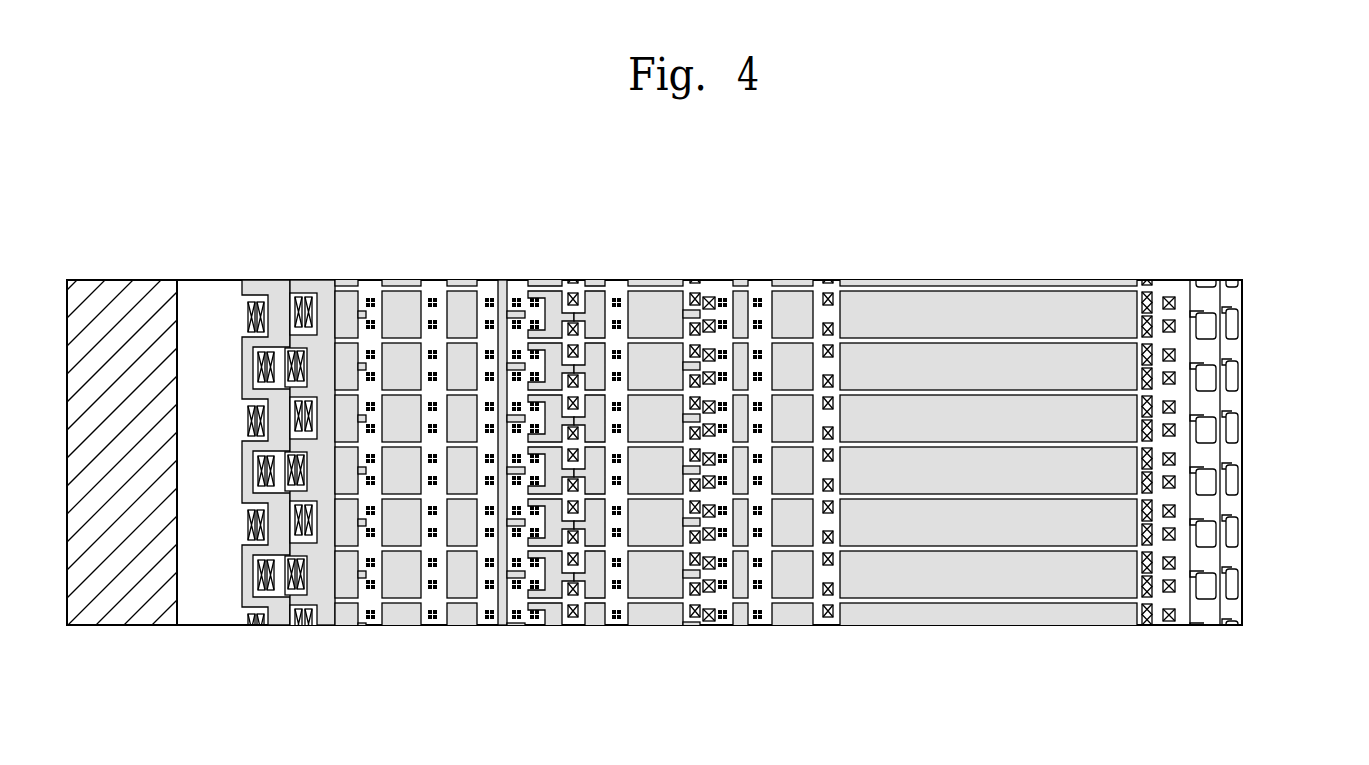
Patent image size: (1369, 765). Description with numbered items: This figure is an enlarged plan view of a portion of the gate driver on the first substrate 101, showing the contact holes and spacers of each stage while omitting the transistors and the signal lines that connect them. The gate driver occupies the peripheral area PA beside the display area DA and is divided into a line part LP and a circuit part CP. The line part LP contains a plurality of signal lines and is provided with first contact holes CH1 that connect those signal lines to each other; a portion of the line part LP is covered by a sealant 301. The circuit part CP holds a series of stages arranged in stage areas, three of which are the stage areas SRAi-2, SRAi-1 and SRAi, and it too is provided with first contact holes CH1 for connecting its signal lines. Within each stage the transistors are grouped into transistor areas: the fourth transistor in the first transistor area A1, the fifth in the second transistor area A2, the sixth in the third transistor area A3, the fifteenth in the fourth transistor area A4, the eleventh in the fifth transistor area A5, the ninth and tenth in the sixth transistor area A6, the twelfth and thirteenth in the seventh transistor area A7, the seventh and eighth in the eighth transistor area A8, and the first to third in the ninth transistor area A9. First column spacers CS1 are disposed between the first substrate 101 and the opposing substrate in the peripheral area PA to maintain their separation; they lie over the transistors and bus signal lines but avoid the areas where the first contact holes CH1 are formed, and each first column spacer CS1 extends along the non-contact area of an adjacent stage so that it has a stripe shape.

The sealant 301 is at (132, 293).
The first substrate 101 is at (202, 297).
The first contact holes CH1 is at (250, 315).
The first column spacers CS1 is at (281, 297).
The first transistor area A1 is at (359, 279).
The second transistor area A2 is at (421, 279).
The third transistor area A3 is at (477, 279).
The fourth transistor area A4 is at (562, 279).
The fifth transistor area A5 is at (606, 279).
The sixth transistor area A6 is at (683, 279).
The seventh transistor area A7 is at (748, 279).
The eighth transistor area A8 is at (813, 279).
The ninth transistor area A9 is at (1135, 279).
The stage area SRAi-2 is at (1245, 287).
The stage area SRAi-1 is at (1245, 391).
The stage area SRAi is at (1245, 443).
The line part LP is at (317, 625).
The circuit part CP is at (1188, 625).
The peripheral area PA is at (67, 692).
The display area DA is at (1242, 692).